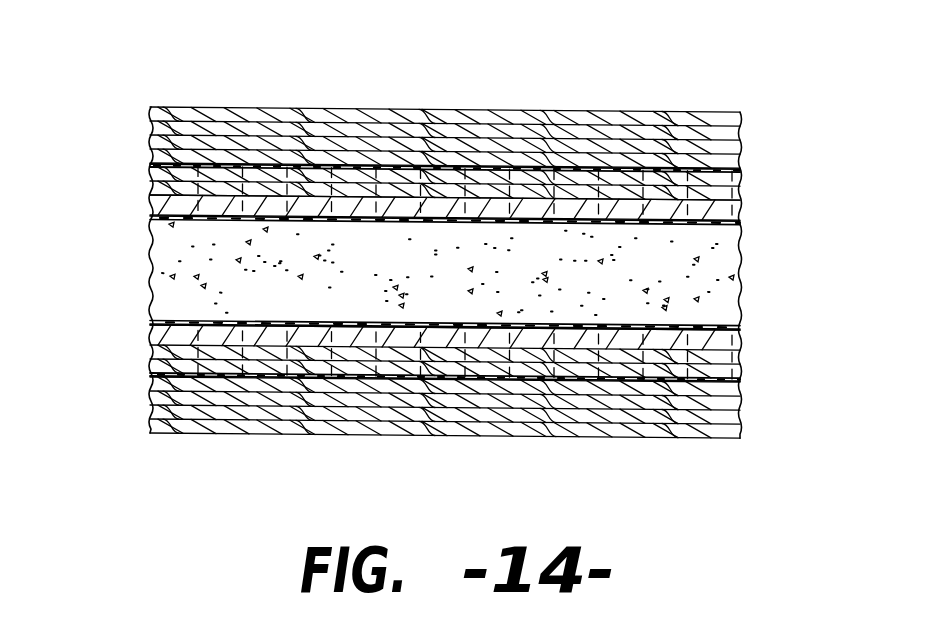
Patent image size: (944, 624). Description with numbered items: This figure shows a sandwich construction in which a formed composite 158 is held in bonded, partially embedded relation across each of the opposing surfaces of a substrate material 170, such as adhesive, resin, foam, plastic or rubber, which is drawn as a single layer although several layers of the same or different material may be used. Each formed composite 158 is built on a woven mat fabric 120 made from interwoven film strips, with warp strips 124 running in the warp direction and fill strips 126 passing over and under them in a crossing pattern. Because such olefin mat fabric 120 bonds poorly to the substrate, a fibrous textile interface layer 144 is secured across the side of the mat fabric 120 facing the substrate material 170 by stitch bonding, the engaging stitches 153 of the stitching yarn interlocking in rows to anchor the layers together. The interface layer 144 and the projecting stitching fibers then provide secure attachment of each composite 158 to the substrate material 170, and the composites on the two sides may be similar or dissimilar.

The woven mat fabric 120 is at (221, 100).
The warp strips 124 is at (636, 178).
The fill strips 126 is at (710, 177).
The fibrous textile interface layer 144 is at (162, 204).
The engaging stitches 153 is at (160, 219).
The formed composite 158 is at (760, 172).
The substrate material 170 is at (736, 280).